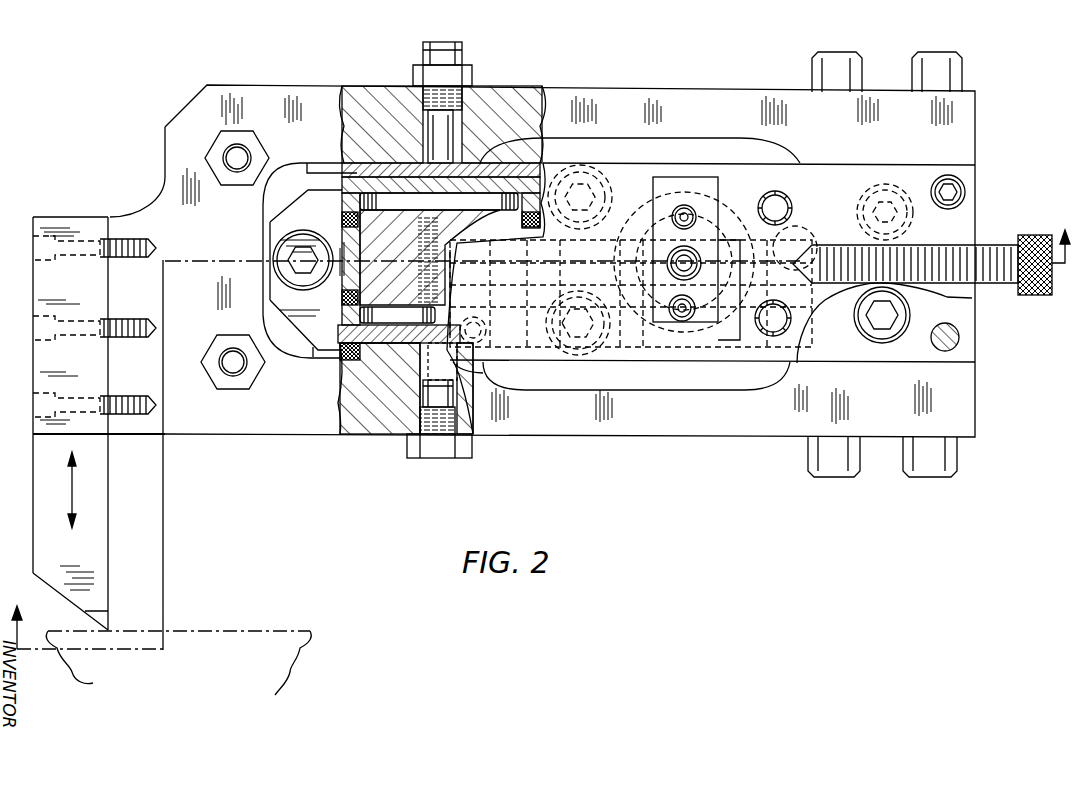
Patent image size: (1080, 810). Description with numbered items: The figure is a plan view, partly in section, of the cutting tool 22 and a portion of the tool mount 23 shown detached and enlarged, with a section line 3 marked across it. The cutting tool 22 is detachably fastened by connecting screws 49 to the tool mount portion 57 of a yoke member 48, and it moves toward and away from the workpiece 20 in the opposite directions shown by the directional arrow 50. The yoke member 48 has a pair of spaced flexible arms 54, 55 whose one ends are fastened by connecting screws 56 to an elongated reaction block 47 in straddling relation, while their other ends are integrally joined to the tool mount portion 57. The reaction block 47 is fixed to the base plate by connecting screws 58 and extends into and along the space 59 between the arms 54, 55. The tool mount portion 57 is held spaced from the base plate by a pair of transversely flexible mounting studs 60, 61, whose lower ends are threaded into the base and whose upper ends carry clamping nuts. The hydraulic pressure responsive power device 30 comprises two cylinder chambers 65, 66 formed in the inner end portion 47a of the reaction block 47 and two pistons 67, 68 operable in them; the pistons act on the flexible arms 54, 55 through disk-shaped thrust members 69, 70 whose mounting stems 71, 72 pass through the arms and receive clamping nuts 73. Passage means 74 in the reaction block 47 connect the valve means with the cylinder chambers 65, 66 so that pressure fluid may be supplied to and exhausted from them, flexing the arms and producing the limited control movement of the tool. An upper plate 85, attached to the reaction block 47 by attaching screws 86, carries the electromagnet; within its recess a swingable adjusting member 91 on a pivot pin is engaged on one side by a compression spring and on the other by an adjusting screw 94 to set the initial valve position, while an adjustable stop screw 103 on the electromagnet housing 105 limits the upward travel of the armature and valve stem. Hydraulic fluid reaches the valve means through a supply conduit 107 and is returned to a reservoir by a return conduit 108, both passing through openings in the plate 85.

The workpiece 20 is at (192, 629).
The cutting tool 22 is at (112, 478).
The tool mount 23 is at (738, 438).
The section line 3 is at (540, 426).
The hydraulic pressure responsive power device 30 is at (315, 355).
The reaction block 47 is at (818, 350).
The inner end portion of the reaction block 47a is at (303, 197).
The yoke member 48 is at (548, 437).
The connecting screws 49 is at (90, 250).
The directional arrow 50 is at (70, 480).
The flexible arm 54 is at (604, 436).
The flexible arm 55 is at (675, 92).
The connecting screws 56 is at (953, 450).
The tool mount portion 57 is at (165, 180).
The connecting screws 58 is at (880, 342).
The space between the arms 59 is at (713, 148).
The mounting stud 60 is at (233, 366).
The mounting stud 61 is at (222, 157).
The cylinder chamber 65 is at (392, 320).
The cylinder chamber 66 is at (378, 190).
The piston 67 is at (340, 388).
The piston 68 is at (355, 183).
The thrust member 69 is at (427, 396).
The thrust member 70 is at (507, 163).
The mounting stem 71 is at (400, 403).
The mounting stem 72 is at (457, 130).
The clamping nuts 73 is at (465, 73).
The passage means 74 is at (439, 203).
The upper plate 85 is at (968, 318).
The attaching screws 86 is at (958, 342).
The swingable adjusting member 91 is at (795, 238).
The adjusting screw 94 is at (990, 245).
The adjustable stop screw 103 is at (700, 250).
The housing 105 is at (660, 338).
The supply conduit 107 is at (790, 204).
The return conduit 108 is at (773, 337).